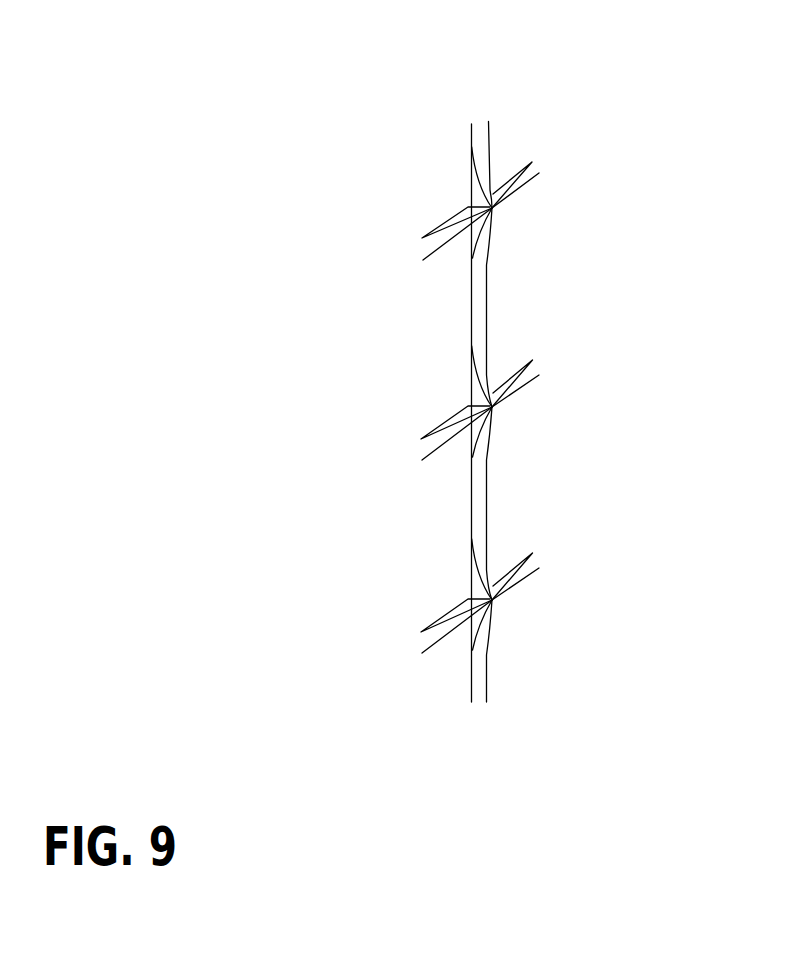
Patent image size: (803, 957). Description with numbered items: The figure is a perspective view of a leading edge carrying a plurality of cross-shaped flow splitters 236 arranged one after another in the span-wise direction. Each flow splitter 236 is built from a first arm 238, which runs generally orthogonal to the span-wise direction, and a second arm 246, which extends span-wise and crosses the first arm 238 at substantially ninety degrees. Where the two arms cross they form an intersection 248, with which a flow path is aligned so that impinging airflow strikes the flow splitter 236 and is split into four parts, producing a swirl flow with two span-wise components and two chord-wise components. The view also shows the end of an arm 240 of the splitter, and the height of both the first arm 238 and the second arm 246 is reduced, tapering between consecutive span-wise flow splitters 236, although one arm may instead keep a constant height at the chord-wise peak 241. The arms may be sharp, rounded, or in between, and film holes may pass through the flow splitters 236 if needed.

The cross-shaped flow splitter 236 is at (532, 191).
The first arm 238 is at (463, 212).
The barb point 240 is at (440, 224).
The chord-wise peak 241 is at (493, 408).
The second arm 246 is at (489, 135).
The intersection 248 is at (497, 211).